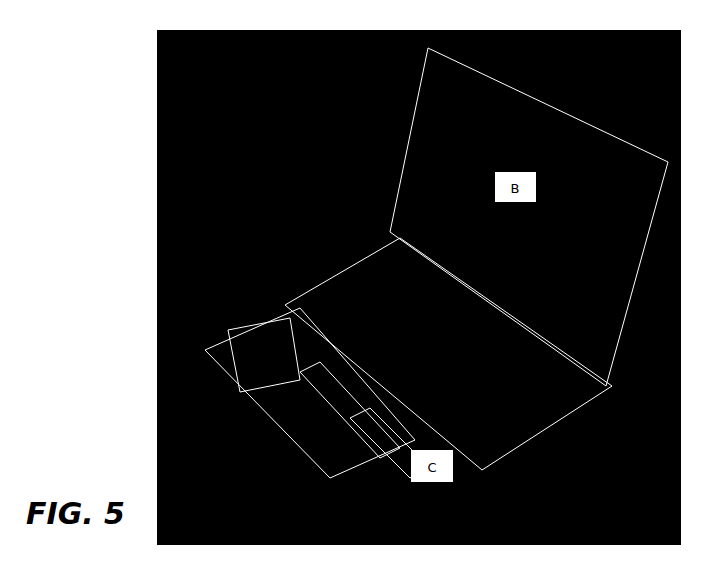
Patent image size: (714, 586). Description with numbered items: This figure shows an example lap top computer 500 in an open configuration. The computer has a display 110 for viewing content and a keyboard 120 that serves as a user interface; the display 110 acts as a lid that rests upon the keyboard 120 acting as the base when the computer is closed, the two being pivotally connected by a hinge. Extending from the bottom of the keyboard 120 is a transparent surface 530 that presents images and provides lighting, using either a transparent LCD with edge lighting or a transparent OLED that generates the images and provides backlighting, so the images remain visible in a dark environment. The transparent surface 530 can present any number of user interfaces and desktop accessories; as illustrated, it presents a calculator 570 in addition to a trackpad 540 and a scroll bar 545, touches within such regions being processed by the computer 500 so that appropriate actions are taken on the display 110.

The lap top computer 500 is at (284, 152).
The display 110 is at (408, 127).
The keyboard 120 is at (318, 270).
The transparent surface 530 is at (237, 320).
The calculator 570 is at (250, 373).
The trackpad 540 is at (318, 413).
The scroll bar 545 is at (347, 450).